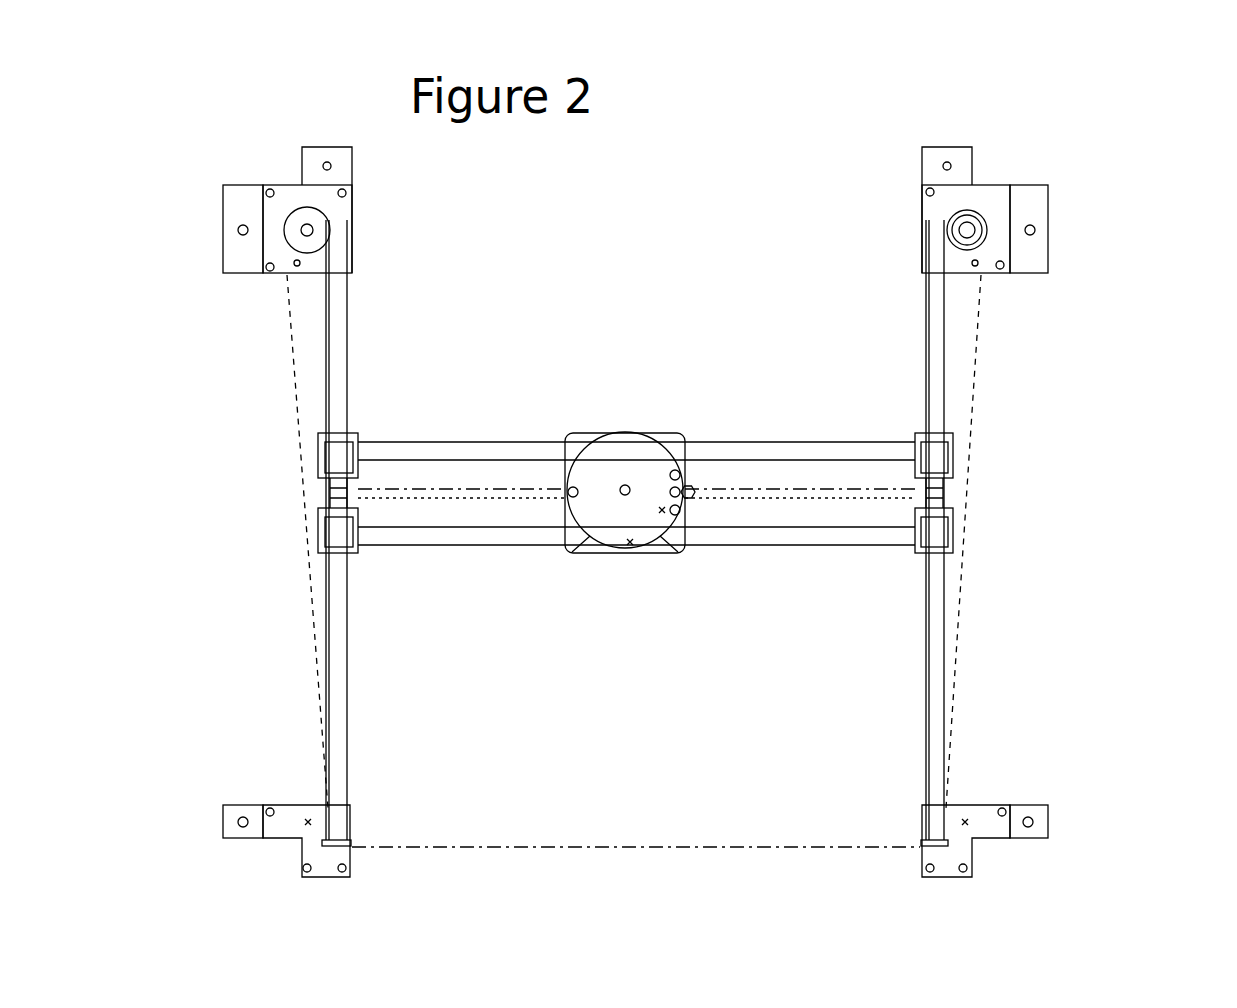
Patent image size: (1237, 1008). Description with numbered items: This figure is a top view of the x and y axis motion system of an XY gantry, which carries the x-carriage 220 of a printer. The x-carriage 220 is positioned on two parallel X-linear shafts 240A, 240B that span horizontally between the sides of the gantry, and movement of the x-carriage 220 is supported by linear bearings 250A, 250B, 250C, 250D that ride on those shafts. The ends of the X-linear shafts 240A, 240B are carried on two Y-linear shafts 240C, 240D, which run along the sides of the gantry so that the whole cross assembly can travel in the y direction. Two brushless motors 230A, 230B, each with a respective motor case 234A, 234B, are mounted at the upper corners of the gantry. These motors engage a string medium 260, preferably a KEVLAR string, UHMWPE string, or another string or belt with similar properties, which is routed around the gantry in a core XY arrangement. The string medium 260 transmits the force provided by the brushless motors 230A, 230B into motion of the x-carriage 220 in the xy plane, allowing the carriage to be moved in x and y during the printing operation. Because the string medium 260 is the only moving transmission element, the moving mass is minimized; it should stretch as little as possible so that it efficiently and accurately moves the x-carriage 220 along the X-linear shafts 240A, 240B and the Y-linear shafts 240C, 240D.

The x-carriage 220 is at (664, 384).
The brushless motor 230A is at (241, 177).
The brushless motor 230B is at (1057, 170).
The motor case 234A is at (284, 158).
The motor case 234B is at (1007, 158).
The X-linear shaft 240A is at (636, 385).
The X-linear shaft 240B is at (636, 579).
The Y-linear shaft 240C is at (227, 530).
The Y-linear shaft 240D is at (1054, 530).
The linear bearing 250A is at (223, 555).
The linear bearing 250B is at (227, 482).
The linear bearing 250C is at (1011, 470).
The linear bearing 250D is at (1010, 543).
The string medium 260 is at (557, 561).